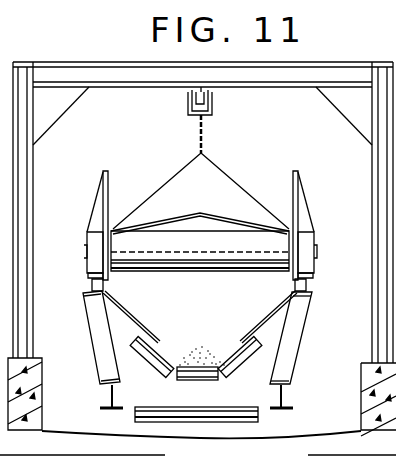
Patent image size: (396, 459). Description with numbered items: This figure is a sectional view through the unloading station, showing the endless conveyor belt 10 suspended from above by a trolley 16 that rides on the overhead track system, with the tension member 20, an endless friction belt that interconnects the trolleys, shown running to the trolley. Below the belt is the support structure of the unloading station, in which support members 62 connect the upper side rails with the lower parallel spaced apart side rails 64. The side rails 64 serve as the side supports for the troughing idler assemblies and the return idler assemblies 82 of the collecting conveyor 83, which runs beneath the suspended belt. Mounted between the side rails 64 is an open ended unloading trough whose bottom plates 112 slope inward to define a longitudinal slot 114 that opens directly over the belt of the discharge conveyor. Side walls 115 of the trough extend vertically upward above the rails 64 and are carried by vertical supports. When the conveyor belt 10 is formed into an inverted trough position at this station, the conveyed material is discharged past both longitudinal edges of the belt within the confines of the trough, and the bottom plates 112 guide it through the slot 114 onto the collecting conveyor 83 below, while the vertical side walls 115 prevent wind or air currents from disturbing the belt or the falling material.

The endless conveyor belt 10 is at (213, 212).
The trolley 16 is at (212, 111).
The tension member 20 is at (198, 128).
The support member 62 is at (100, 357).
The side rails 64 is at (92, 285).
The return idler assembly 82 is at (204, 424).
The collecting conveyor 83 is at (246, 366).
The bottom plates 112 is at (125, 318).
The longitudinal slot 114 is at (232, 343).
The side walls 115 is at (107, 194).